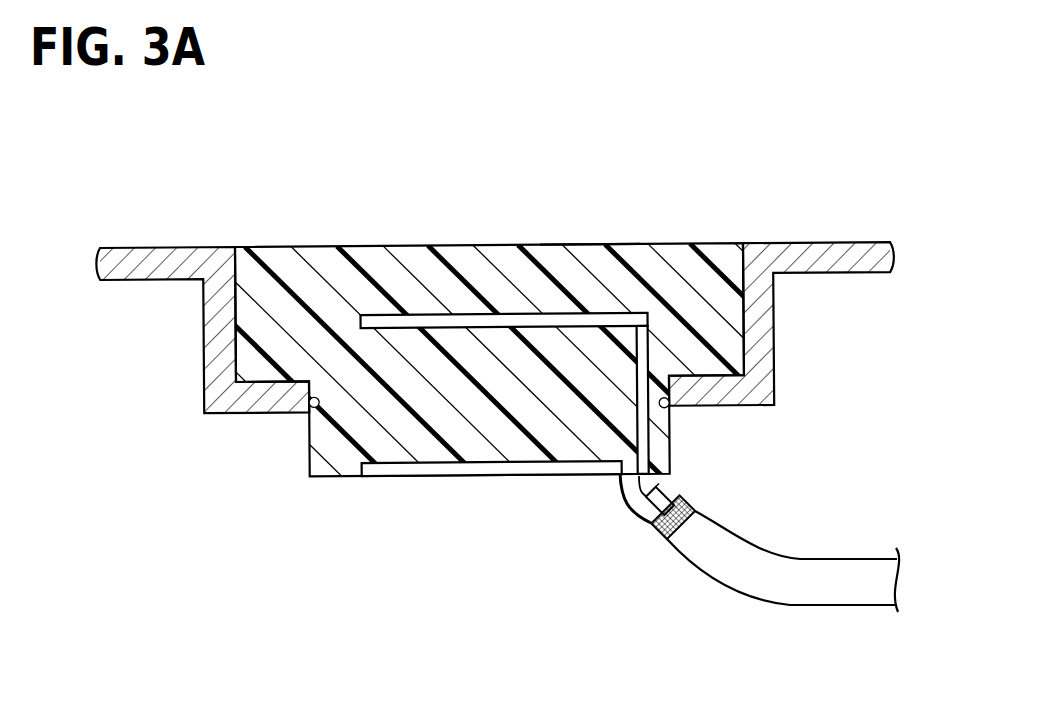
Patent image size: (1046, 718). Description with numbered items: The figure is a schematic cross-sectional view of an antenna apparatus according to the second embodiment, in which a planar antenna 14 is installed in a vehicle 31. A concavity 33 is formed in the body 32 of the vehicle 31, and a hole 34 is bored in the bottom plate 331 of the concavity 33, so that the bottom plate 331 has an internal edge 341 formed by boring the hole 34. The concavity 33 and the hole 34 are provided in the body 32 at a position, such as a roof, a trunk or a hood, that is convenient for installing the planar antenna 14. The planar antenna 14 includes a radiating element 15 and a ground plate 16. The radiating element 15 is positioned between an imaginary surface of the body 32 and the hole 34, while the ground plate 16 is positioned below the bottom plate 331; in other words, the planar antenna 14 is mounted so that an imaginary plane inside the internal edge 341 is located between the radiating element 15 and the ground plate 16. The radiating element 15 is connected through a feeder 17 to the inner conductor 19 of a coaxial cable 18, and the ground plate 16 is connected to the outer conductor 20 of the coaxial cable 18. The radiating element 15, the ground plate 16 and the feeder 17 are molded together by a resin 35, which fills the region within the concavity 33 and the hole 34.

The planar antenna 14 is at (416, 272).
The radiating element 15 is at (485, 315).
The ground plate 16 is at (483, 480).
The feeder 17 is at (652, 343).
The coaxial cable 18 is at (702, 578).
The inner conductor 19 is at (650, 482).
The outer conductor 20 is at (620, 496).
The vehicle 31 is at (491, 319).
The body 32 is at (163, 247).
The concavity 33 is at (247, 352).
The bottom plate 331 is at (248, 404).
The hole 34 is at (343, 422).
The internal edge 341 is at (313, 410).
The resin 35 is at (585, 262).